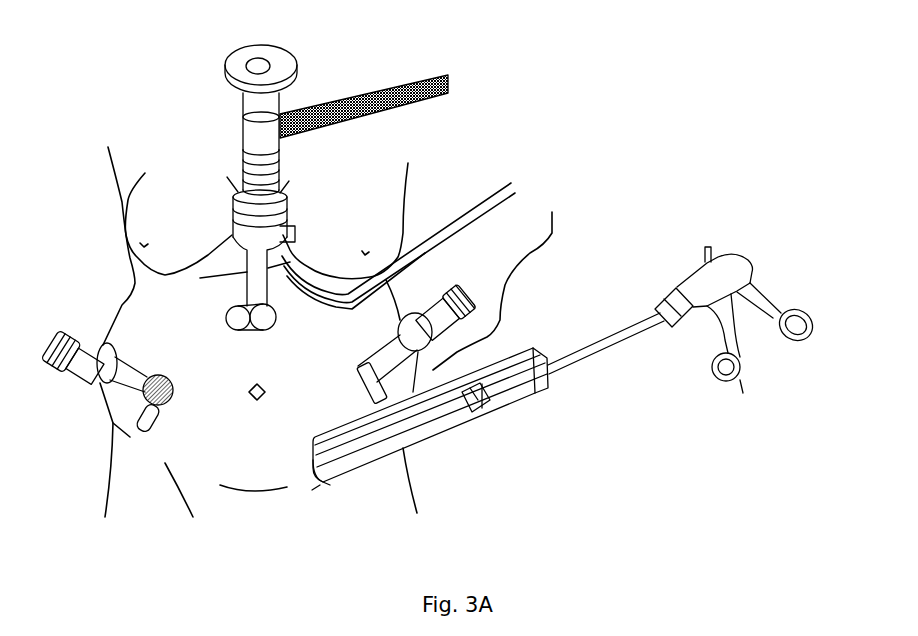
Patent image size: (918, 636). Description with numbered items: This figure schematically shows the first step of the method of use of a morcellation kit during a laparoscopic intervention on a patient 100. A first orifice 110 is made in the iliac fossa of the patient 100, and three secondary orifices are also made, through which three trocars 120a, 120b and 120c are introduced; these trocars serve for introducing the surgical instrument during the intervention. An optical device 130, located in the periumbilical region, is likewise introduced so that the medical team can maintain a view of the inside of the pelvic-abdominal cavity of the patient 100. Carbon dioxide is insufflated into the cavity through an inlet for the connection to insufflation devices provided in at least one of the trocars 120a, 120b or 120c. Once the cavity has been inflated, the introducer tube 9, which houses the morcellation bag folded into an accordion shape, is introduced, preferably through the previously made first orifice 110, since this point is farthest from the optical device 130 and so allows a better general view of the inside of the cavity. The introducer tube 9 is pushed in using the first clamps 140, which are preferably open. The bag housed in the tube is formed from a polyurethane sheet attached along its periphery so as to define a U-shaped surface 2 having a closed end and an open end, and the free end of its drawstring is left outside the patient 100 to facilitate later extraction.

The patient 100 is at (345, 227).
The optical device 130 is at (257, 107).
The trocar 120a is at (95, 345).
The trocar 120b is at (468, 302).
The trocar 120c is at (268, 222).
The introducer tube 9 is at (502, 410).
The U-shaped surface 2 is at (428, 425).
The first orifice 110 is at (320, 487).
The first clamps 140 is at (563, 363).